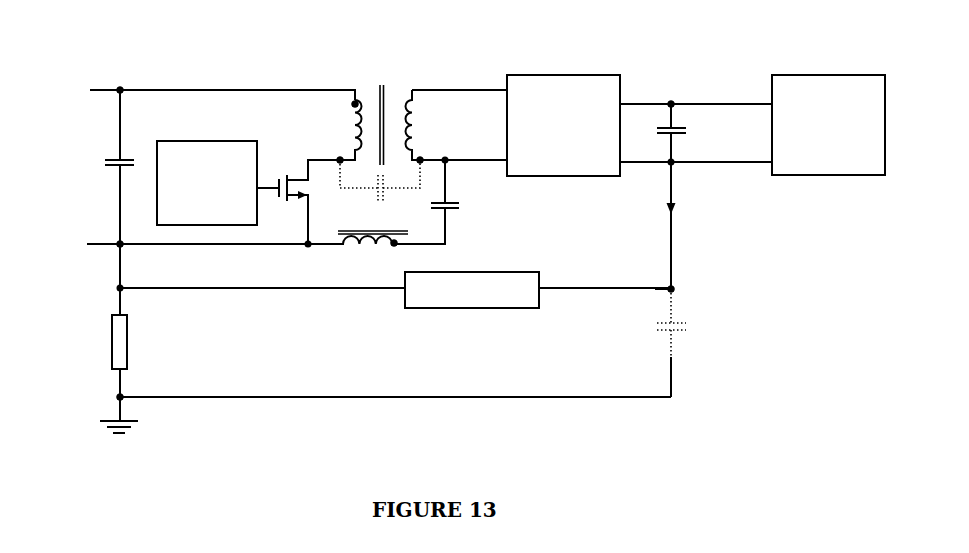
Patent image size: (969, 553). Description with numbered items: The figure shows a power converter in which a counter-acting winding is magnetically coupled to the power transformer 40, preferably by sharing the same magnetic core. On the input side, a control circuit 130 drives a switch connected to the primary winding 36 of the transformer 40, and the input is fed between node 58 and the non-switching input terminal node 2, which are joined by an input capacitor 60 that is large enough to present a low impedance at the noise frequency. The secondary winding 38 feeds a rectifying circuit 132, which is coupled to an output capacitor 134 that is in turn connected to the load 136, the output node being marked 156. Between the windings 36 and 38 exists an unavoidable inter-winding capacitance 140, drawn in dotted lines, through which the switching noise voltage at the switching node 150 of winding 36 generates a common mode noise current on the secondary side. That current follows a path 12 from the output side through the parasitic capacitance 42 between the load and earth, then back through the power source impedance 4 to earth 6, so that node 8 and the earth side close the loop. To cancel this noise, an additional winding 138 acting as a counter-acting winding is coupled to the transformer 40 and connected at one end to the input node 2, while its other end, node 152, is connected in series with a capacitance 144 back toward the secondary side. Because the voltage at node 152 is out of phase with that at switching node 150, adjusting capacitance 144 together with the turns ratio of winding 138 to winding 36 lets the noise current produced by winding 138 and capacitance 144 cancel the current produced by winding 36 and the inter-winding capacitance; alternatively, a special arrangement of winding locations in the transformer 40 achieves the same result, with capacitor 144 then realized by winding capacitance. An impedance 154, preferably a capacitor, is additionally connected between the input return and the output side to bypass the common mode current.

The non-switching input terminal node 2 is at (115, 246).
The power source impedance 4 is at (127, 333).
The earth 6 is at (128, 392).
The node 8 is at (680, 286).
The current path 12 is at (680, 213).
The primary winding 36 is at (352, 120).
The secondary winding 38 is at (410, 105).
The power transformer 40 is at (378, 85).
The parasitic capacitance 42 is at (680, 320).
The node 58 is at (120, 90).
The input capacitor 60 is at (100, 166).
The control circuit 130 is at (248, 192).
The rectifying circuit 132 is at (563, 125).
The output capacitor 134 is at (688, 131).
The load 136 is at (828, 125).
The additional winding 138 is at (352, 246).
The inter-winding capacitance 140 is at (375, 190).
The capacitance 144 is at (478, 192).
The switching node 150 is at (337, 157).
The node 152 is at (450, 243).
The impedance 154 is at (503, 315).
The output node 156 is at (673, 96).